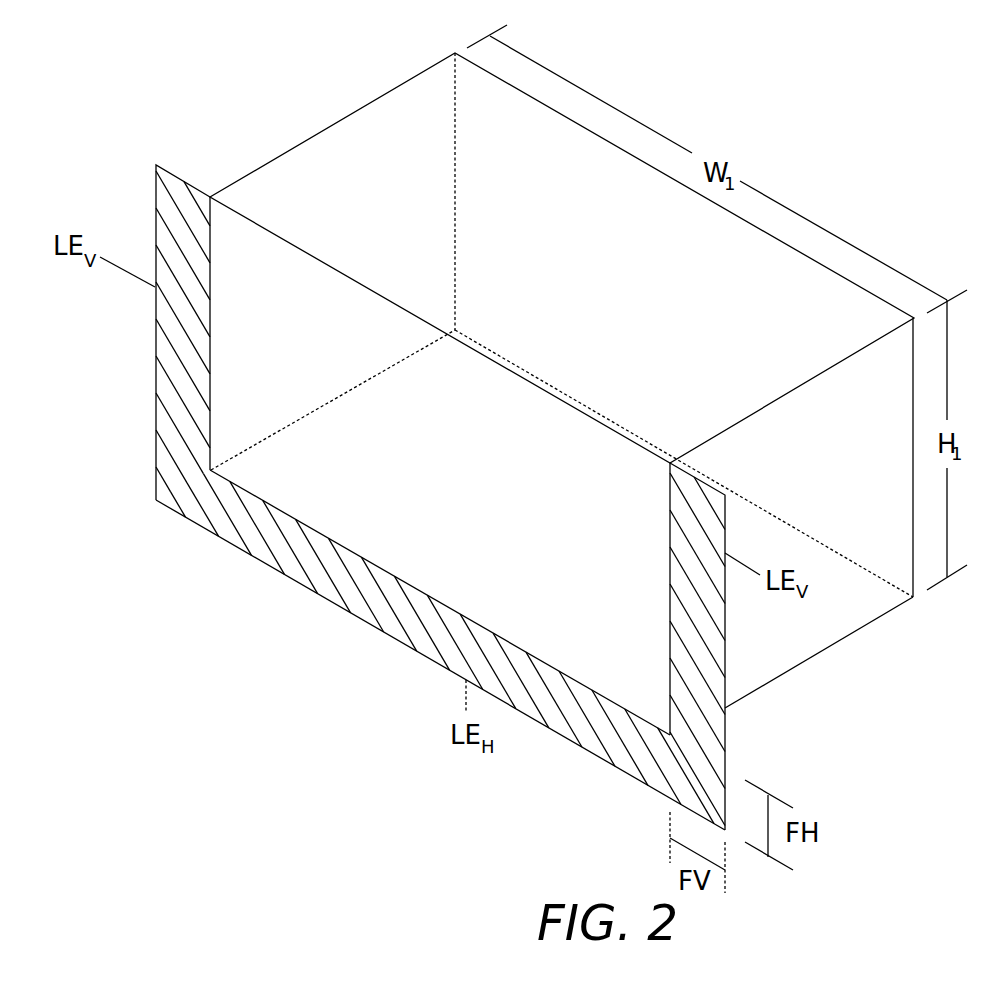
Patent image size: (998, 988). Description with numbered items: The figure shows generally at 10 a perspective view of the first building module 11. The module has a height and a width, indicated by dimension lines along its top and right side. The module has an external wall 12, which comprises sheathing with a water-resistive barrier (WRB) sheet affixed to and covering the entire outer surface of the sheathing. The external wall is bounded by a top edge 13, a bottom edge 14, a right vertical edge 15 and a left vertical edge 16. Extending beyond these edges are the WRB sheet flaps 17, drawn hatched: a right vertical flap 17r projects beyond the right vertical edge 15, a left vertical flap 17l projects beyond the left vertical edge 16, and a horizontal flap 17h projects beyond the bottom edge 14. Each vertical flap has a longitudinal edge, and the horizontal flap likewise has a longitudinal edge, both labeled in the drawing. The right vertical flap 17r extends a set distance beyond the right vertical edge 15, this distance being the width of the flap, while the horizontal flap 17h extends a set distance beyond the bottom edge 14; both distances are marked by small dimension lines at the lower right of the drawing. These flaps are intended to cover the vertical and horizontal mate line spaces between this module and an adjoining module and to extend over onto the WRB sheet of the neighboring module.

The view of building module 10 is at (499, 432).
The building module 11 is at (335, 152).
The external wall 12 is at (253, 237).
The top edge 13 is at (508, 365).
The bottom edge 14 is at (440, 650).
The right vertical edge 15 is at (695, 646).
The left vertical edge 16 is at (176, 332).
The WRB sheet flaps 17 is at (445, 497).
The left vertical flap 17l is at (230, 350).
The horizontal flap 17h is at (386, 603).
The right vertical flap 17r is at (710, 603).